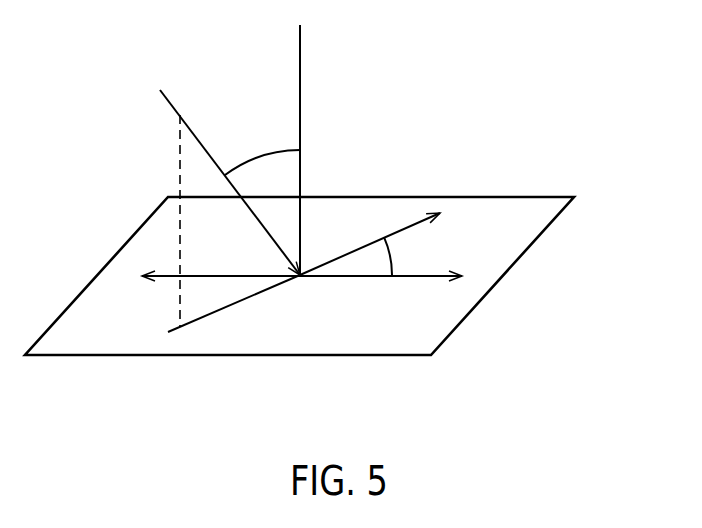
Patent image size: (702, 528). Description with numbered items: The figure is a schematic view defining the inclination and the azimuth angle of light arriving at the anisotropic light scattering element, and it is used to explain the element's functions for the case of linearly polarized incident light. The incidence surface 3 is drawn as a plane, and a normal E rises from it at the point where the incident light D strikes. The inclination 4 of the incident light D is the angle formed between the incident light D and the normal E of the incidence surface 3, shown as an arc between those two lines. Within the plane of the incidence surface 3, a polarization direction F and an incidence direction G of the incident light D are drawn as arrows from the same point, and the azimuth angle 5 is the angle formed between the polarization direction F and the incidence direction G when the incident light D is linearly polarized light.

The incidence surface 3 is at (365, 337).
The inclination 4 is at (262, 154).
The azimuth angle 5 is at (393, 252).
The incident light D is at (172, 105).
The normal E is at (301, 72).
The polarization direction F is at (413, 278).
The incidence direction G is at (401, 230).